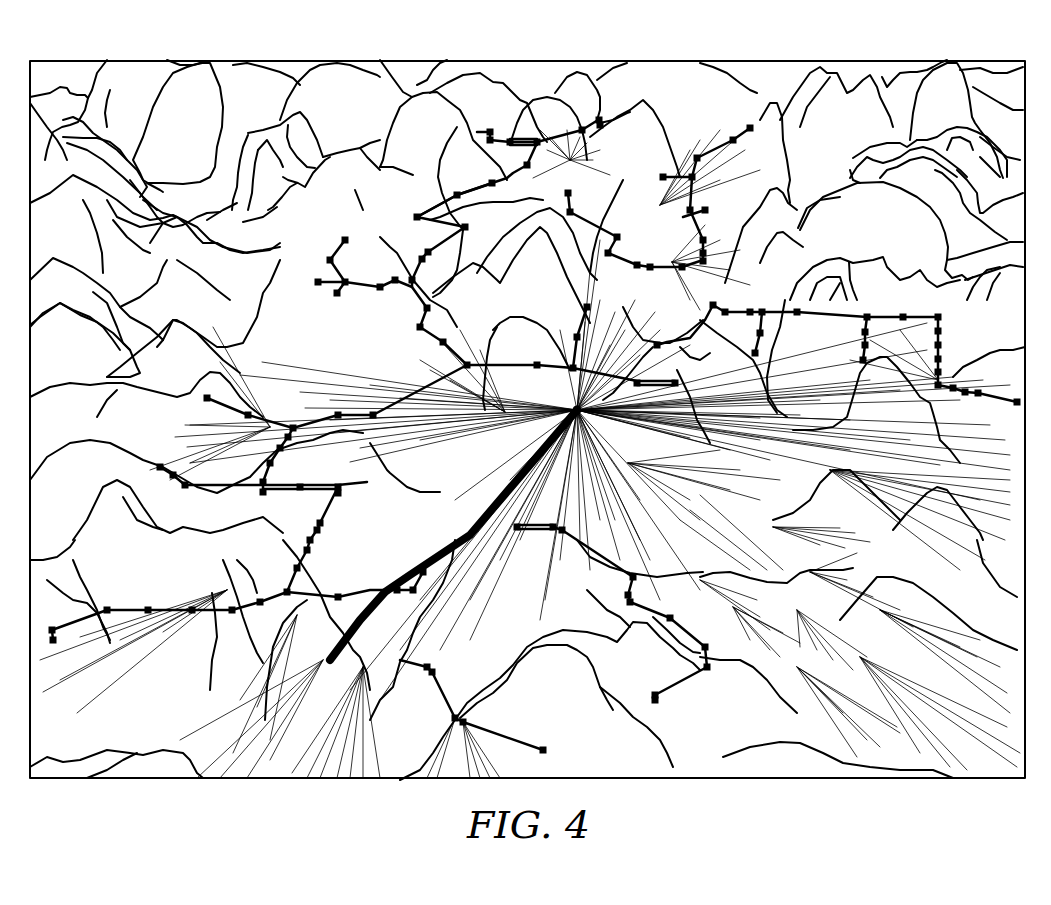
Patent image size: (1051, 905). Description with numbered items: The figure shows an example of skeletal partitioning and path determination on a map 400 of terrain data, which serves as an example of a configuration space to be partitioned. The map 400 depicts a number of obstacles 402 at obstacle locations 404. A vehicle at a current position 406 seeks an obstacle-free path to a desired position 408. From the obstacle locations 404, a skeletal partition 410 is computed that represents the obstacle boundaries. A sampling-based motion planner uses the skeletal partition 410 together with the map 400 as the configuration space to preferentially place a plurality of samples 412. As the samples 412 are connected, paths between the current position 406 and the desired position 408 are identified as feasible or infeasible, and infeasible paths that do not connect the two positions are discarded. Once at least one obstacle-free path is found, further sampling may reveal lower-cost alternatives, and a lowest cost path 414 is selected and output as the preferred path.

The map 400 is at (580, 44).
The obstacles 402 is at (521, 338).
The obstacle locations 404 is at (511, 328).
The current position 406 is at (578, 413).
The desired position 408 is at (400, 652).
The skeletal partition 410 is at (849, 262).
The samples 412 is at (588, 496).
The lowest cost path 414 is at (513, 478).